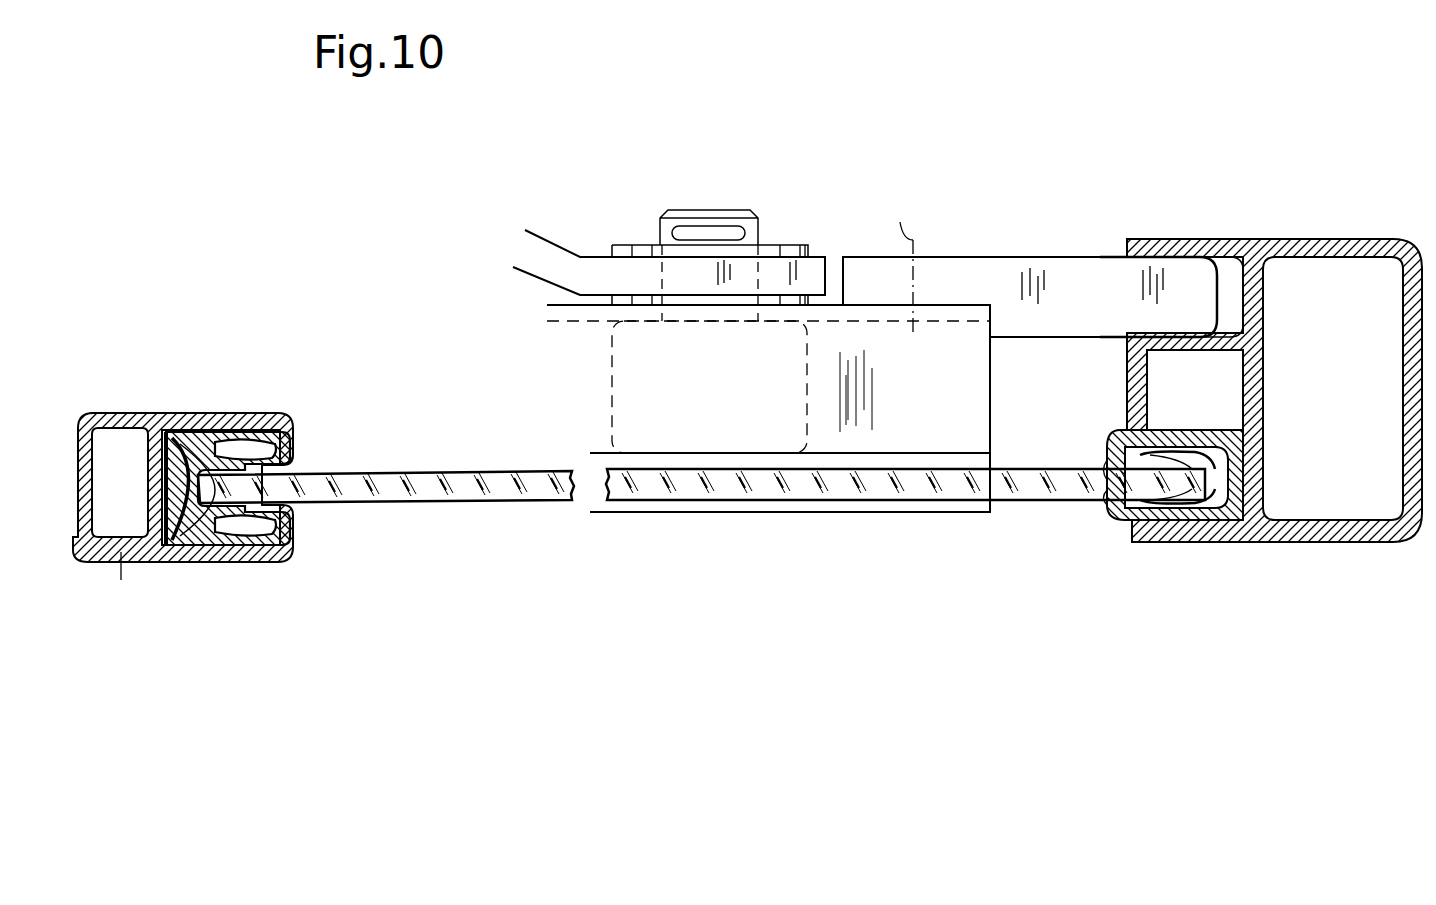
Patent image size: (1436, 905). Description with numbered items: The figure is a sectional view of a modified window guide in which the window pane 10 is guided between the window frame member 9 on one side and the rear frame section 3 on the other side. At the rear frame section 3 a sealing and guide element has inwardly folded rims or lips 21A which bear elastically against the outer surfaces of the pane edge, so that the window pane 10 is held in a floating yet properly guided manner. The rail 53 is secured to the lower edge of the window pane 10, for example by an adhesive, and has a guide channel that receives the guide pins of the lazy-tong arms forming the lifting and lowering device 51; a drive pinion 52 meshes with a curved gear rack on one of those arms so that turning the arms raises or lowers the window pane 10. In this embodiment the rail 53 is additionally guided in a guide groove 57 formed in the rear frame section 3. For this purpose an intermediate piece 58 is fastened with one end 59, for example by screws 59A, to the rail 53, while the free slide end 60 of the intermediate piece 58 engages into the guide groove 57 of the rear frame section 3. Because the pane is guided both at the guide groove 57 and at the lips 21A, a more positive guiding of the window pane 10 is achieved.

The rear frame section 3 is at (1333, 233).
The window frame member 9 is at (132, 405).
The window pane 10 is at (1077, 490).
The inwardly folded rims or lips 21A is at (1167, 462).
The lifting and lowering device 51 is at (582, 250).
The drive pinion 52 is at (622, 368).
The rail 53 is at (927, 435).
The guide groove 57 is at (1228, 286).
The intermediate piece 58 is at (1018, 286).
The end of the intermediate piece 59 is at (888, 273).
The screws 59A is at (909, 264).
The free slide end 60 is at (1117, 286).